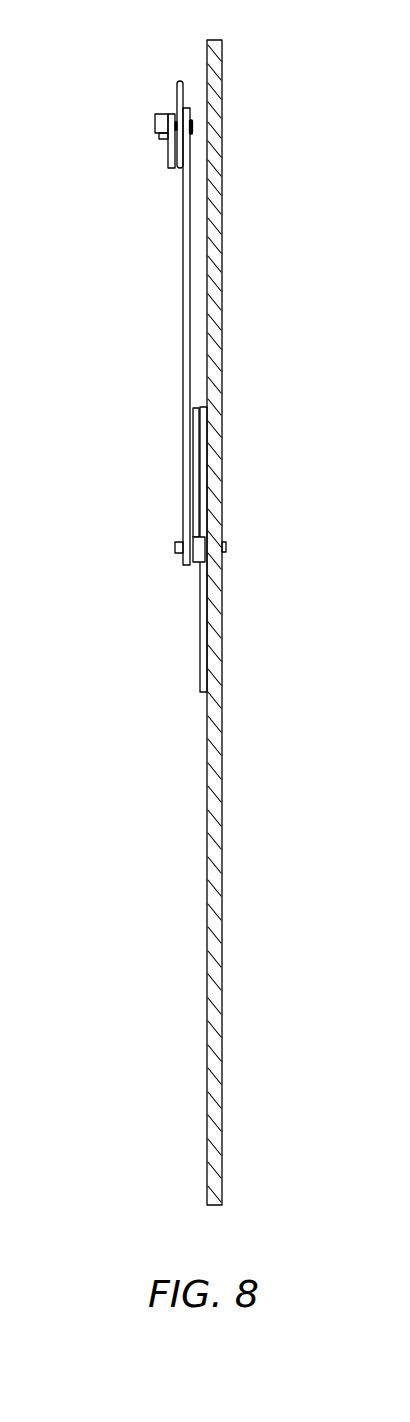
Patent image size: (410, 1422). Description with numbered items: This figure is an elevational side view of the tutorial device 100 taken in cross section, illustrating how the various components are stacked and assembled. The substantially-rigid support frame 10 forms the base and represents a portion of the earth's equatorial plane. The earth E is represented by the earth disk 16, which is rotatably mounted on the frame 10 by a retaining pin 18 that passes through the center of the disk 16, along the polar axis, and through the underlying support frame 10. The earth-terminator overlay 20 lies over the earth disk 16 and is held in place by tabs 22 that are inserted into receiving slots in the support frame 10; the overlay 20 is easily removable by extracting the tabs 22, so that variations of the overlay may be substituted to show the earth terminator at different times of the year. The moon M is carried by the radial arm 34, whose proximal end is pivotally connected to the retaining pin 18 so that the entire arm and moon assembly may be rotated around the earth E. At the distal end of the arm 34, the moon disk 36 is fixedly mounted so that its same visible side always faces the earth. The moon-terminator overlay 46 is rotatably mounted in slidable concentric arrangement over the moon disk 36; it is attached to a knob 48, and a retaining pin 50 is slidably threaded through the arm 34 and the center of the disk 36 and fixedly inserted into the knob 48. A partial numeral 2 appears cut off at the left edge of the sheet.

The support frame 10 is at (207, 1092).
The earth disk 16 is at (203, 652).
The retaining pin 18 is at (175, 547).
The earth-terminator overlay 20 is at (193, 496).
The tabs 22 is at (193, 568).
The radial arm 34 is at (183, 315).
The moon disk 36 is at (177, 98).
The moon-terminator overlay 46 is at (168, 143).
The knob 48 is at (155, 118).
The retaining pin 50 is at (190, 122).
The tutorial device 100 is at (88, 612).
The earth E is at (138, 438).
The moon M is at (148, 173).
The partial numeral 2 is at (5, 192).